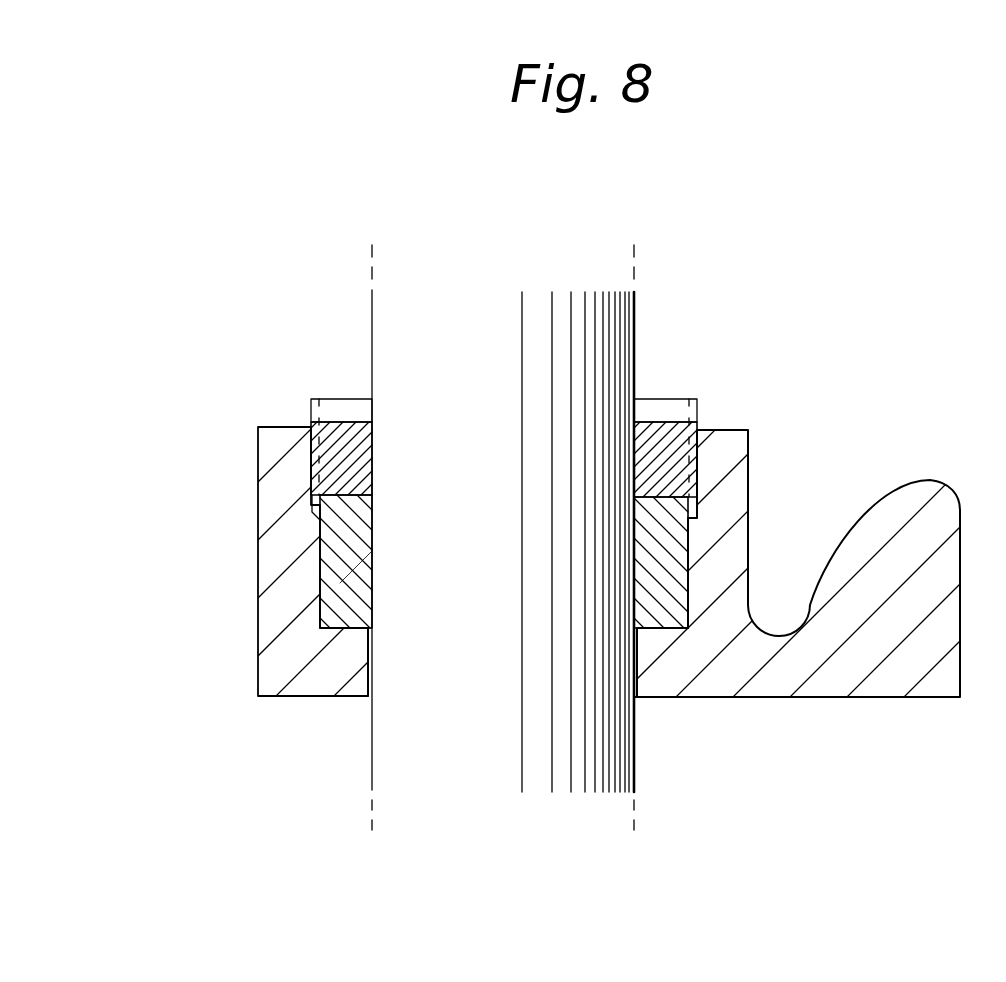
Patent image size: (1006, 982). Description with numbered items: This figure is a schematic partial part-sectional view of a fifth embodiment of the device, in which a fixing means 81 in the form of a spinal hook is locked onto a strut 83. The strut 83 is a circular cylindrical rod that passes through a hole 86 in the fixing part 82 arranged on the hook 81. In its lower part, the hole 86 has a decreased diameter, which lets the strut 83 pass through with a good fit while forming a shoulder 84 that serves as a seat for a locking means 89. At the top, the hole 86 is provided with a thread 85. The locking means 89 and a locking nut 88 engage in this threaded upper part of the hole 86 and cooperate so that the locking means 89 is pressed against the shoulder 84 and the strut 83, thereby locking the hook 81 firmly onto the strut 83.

The fixing means 81 is at (775, 699).
The fixing part 82 is at (270, 567).
The strut 83 is at (378, 350).
The shoulder 84 is at (347, 632).
The thread 85 is at (312, 510).
The hole 86 is at (321, 602).
The locking nut 88 is at (312, 422).
The locking means 89 is at (340, 583).